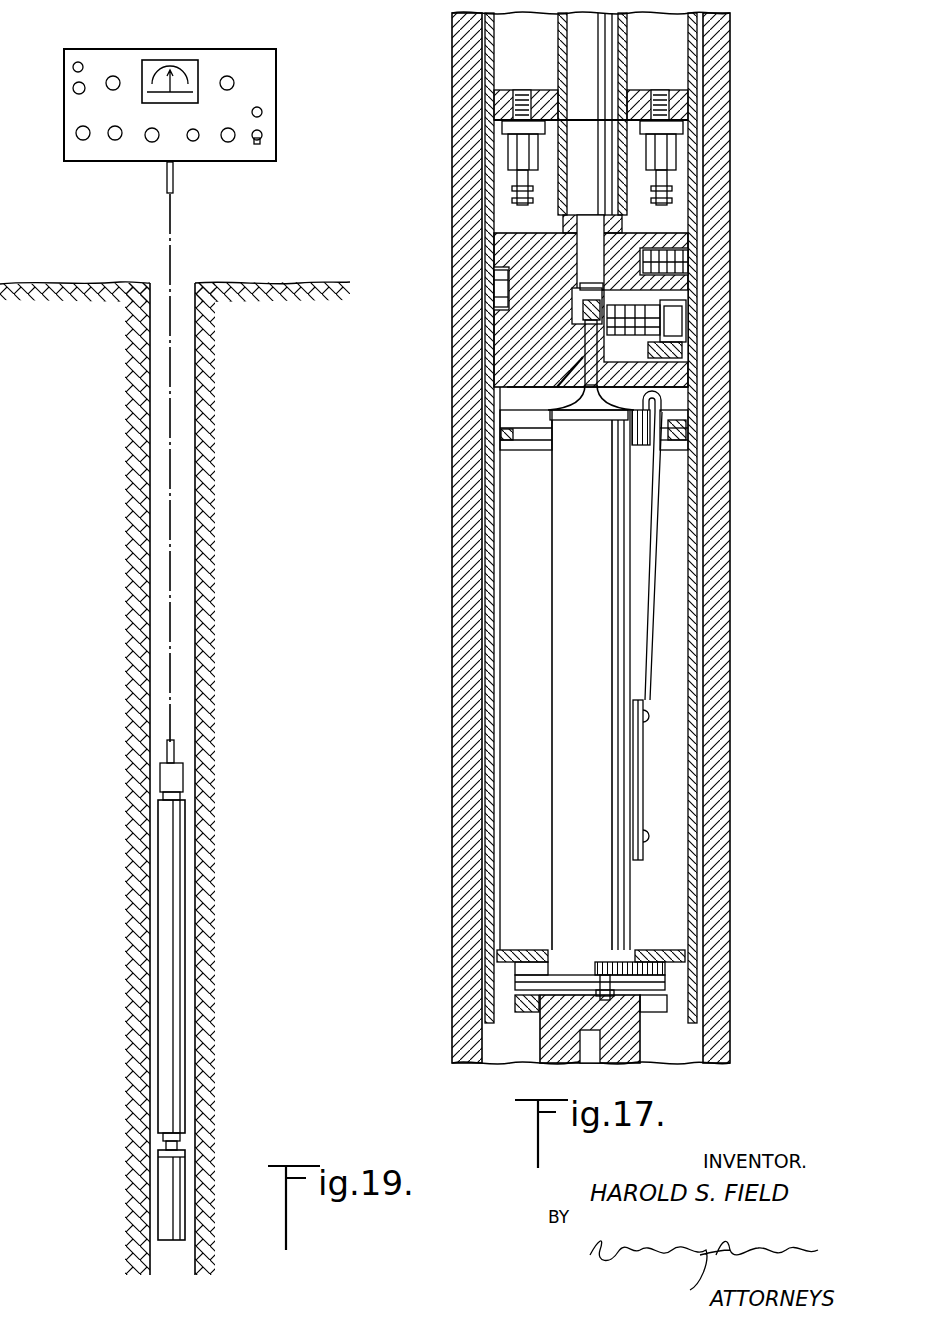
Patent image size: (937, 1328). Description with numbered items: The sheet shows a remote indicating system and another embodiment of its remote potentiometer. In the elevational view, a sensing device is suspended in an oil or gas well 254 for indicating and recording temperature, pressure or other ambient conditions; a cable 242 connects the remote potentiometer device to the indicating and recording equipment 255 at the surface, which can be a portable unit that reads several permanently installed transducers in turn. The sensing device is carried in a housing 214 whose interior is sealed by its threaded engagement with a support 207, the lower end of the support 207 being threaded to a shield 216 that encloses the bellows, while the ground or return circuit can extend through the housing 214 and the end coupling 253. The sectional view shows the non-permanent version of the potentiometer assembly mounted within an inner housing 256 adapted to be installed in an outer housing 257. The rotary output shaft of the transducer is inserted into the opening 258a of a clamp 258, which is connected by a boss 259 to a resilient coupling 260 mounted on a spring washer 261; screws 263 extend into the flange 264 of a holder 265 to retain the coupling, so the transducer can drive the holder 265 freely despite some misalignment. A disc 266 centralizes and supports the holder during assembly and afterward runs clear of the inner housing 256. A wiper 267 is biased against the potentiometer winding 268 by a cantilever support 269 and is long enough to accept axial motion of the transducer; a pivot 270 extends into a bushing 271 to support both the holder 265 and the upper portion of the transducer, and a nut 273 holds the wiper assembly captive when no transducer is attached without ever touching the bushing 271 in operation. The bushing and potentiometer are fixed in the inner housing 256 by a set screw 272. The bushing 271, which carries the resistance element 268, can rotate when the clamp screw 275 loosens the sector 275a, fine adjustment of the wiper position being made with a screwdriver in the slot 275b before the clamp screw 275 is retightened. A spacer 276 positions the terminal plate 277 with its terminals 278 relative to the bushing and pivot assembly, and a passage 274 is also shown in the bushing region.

In FIG. 19, the indicating and recording equipment 255 is at (272, 152).
In FIG. 19, the cable 242 is at (172, 573).
In FIG. 19, the oil or gas well 254 is at (198, 700).
In FIG. 19, the end coupling 253 is at (184, 780).
In FIG. 19, the housing 214 is at (175, 985).
In FIG. 19, the support 207 is at (167, 1143).
In FIG. 19, the shield 216 is at (165, 1190).
In FIG. 17, the inner housing 256 is at (490, 866).
In FIG. 17, the outer housing 257 is at (717, 977).
In FIG. 17, the spacer 276 is at (587, 160).
In FIG. 17, the terminal plate 277 is at (680, 106).
In FIG. 17, the terminals 278 is at (665, 152).
In FIG. 17, the bushing 271 is at (505, 347).
In FIG. 17, the passage 274 is at (588, 289).
In FIG. 17, the nut 273 is at (584, 301).
In FIG. 17, the set screw 272 is at (690, 257).
In FIG. 17, the clamp screw 275 is at (690, 318).
In FIG. 17, the sector 275a is at (690, 352).
In FIG. 17, the slot 275b is at (497, 283).
In FIG. 17, the pivot 270 is at (593, 363).
In FIG. 17, the holder 265 is at (557, 798).
In FIG. 17, the disc 266 is at (523, 940).
In FIG. 17, the wiper 267 is at (668, 405).
In FIG. 17, the potentiometer winding 268 is at (685, 432).
In FIG. 17, the cantilever support 269 is at (657, 522).
In FIG. 17, the flange 264 is at (522, 968).
In FIG. 17, the spring washer 261 is at (650, 985).
In FIG. 17, the resilient coupling 260 is at (517, 985).
In FIG. 17, the boss 259 is at (620, 957).
In FIG. 17, the clamp 258 is at (630, 1040).
In FIG. 17, the opening 258a is at (580, 1062).
In FIG. 17, the screws 263 is at (528, 1020).